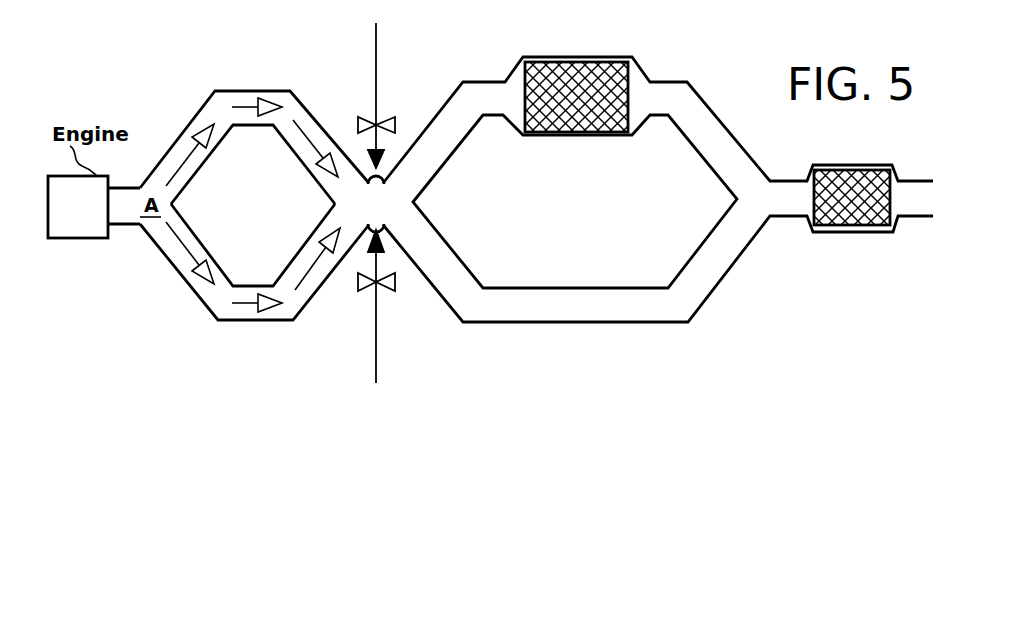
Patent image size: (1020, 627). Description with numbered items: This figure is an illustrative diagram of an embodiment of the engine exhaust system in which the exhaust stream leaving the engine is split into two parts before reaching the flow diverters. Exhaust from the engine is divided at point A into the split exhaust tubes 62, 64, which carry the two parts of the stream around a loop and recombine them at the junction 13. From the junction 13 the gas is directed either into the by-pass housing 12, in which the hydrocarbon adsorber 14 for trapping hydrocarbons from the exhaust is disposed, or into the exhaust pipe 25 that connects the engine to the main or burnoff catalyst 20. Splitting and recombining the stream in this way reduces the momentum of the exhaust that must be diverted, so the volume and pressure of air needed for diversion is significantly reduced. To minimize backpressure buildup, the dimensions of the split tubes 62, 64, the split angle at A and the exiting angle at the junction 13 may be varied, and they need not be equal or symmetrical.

The by-pass housing 12 is at (445, 102).
The junction 13 is at (388, 215).
The hydrocarbon adsorber 14 is at (584, 120).
The burnoff catalyst 20 is at (832, 218).
The exhaust pipe 25 is at (585, 322).
The split exhaust tube 62 is at (189, 125).
The split exhaust tube 64 is at (185, 280).